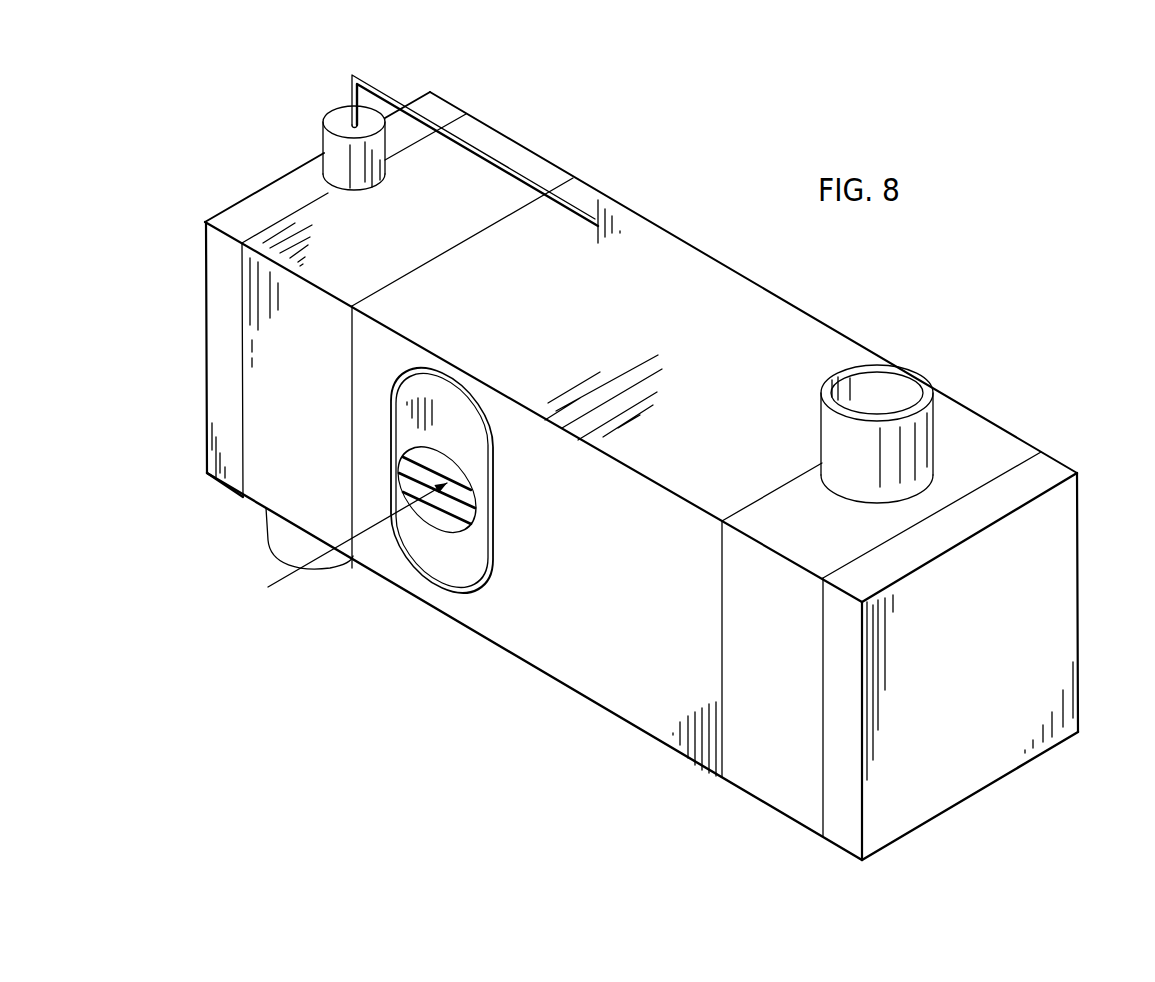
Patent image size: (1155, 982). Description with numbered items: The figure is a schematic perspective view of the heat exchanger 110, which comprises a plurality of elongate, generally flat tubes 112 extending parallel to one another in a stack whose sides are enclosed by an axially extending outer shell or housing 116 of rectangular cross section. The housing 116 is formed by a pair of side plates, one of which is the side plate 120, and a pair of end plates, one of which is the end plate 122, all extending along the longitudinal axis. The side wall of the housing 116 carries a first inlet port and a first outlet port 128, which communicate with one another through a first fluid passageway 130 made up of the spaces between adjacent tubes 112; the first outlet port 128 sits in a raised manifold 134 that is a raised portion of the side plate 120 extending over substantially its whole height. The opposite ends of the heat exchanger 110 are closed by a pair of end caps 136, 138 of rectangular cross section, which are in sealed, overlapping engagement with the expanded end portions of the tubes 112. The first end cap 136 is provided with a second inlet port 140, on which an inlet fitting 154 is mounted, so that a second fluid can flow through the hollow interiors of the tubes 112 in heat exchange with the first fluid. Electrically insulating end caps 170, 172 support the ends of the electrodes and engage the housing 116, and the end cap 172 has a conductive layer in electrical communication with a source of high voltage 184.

The heat exchanger 110 is at (884, 336).
The tubes 112 is at (458, 476).
The housing 116 is at (593, 728).
The side plate 120 is at (562, 657).
The end plate 122 is at (783, 323).
The first outlet port 128 is at (433, 522).
The first fluid passageway 130 is at (413, 457).
The raised manifold 134 is at (442, 577).
The first end cap 136 is at (1007, 428).
The second end cap 138 is at (527, 143).
The second inlet port 140 is at (890, 385).
The inlet fitting 154 is at (933, 418).
The end cap 170 is at (1057, 455).
The end cap 172 is at (237, 218).
The source of high voltage 184 is at (328, 113).